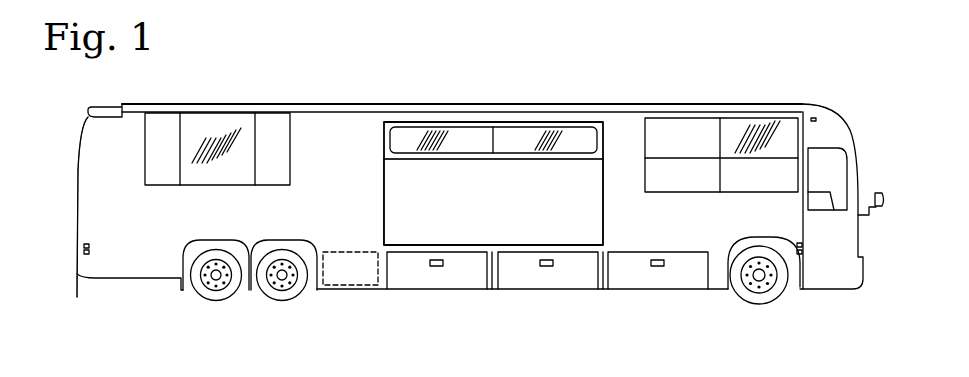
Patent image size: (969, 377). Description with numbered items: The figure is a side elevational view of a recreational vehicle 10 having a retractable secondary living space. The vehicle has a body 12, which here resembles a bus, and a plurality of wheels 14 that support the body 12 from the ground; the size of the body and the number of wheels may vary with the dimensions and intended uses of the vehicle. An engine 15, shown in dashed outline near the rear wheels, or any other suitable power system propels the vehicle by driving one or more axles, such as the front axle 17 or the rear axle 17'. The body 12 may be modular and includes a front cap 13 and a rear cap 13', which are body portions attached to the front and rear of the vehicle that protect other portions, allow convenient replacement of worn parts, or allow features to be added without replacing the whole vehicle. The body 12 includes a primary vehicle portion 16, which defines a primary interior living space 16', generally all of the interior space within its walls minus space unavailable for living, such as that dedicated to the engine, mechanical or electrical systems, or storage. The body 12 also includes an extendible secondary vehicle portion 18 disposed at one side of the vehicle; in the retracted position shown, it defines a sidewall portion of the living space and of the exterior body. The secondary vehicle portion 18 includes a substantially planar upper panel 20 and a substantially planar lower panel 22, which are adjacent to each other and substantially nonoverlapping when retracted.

The recreational vehicle 10 is at (594, 76).
The body 12 is at (330, 104).
The front cap 13 is at (829, 98).
The rear cap 13' is at (75, 301).
The wheels 14 is at (215, 304).
The engine 15 is at (340, 286).
The primary vehicle portion 16 is at (69, 224).
The primary interior living space 16' is at (71, 151).
The front axle 17 is at (725, 295).
The rear axle 17' is at (215, 294).
The extendible secondary vehicle portion 18 is at (370, 122).
The upper panel 20 is at (418, 121).
The lower panel 22 is at (479, 215).